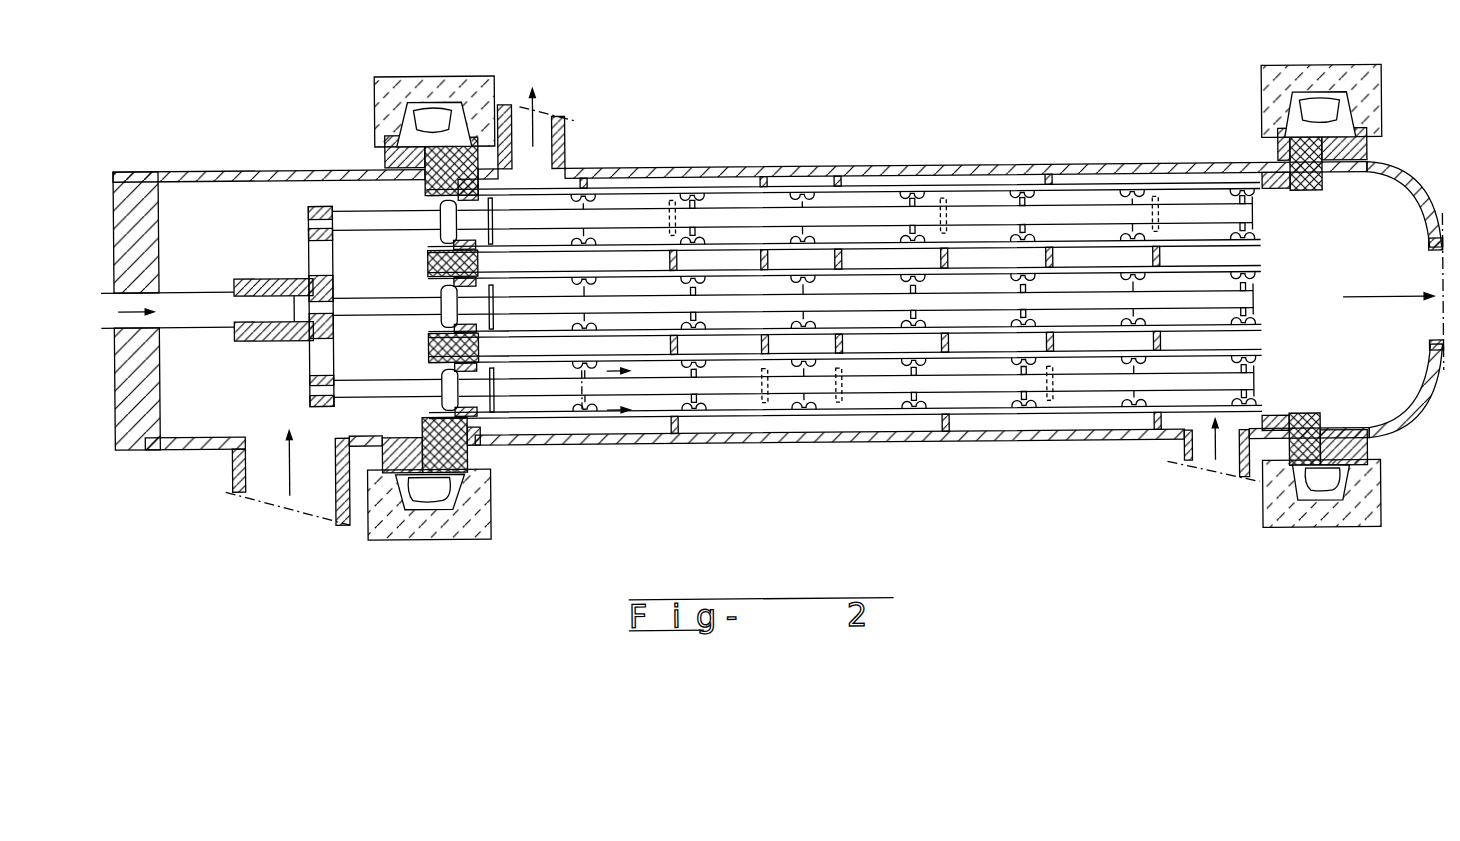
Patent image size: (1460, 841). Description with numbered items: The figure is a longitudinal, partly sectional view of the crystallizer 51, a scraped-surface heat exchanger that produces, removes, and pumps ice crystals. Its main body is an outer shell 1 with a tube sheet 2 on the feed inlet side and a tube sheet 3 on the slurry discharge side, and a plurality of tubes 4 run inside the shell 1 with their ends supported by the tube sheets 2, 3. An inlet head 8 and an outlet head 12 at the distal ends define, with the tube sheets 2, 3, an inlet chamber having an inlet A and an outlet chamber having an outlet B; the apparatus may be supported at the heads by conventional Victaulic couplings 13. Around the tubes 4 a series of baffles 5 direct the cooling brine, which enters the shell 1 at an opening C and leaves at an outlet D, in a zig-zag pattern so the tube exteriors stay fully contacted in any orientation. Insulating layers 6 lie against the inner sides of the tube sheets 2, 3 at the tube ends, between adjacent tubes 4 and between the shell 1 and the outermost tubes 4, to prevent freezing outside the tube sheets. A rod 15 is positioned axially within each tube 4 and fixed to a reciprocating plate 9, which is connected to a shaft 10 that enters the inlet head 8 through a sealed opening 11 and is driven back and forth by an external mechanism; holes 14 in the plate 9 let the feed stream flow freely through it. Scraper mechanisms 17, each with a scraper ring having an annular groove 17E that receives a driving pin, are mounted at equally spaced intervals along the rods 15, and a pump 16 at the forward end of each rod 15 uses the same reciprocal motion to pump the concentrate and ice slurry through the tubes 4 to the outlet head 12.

The outer shell 1 is at (628, 174).
The tube sheet 2 is at (452, 458).
The tube sheet 3 is at (669, 424).
The tubes 4 is at (553, 256).
The baffles 5 is at (946, 428).
The insulating layers 6 is at (490, 188).
The inlet head 8 is at (200, 172).
The reciprocating plate 9 is at (333, 211).
The shaft 10 is at (207, 298).
The sealed opening 11 is at (148, 262).
The outlet head 12 is at (1413, 193).
The Victaulic couplings 13 is at (370, 82).
The holes 14 is at (336, 245).
The rod 15 is at (404, 303).
The pump 16 is at (468, 213).
The scraper mechanisms 17 is at (692, 203).
The annular groove 17E is at (700, 410).
The crystallizer 51 is at (184, 123).